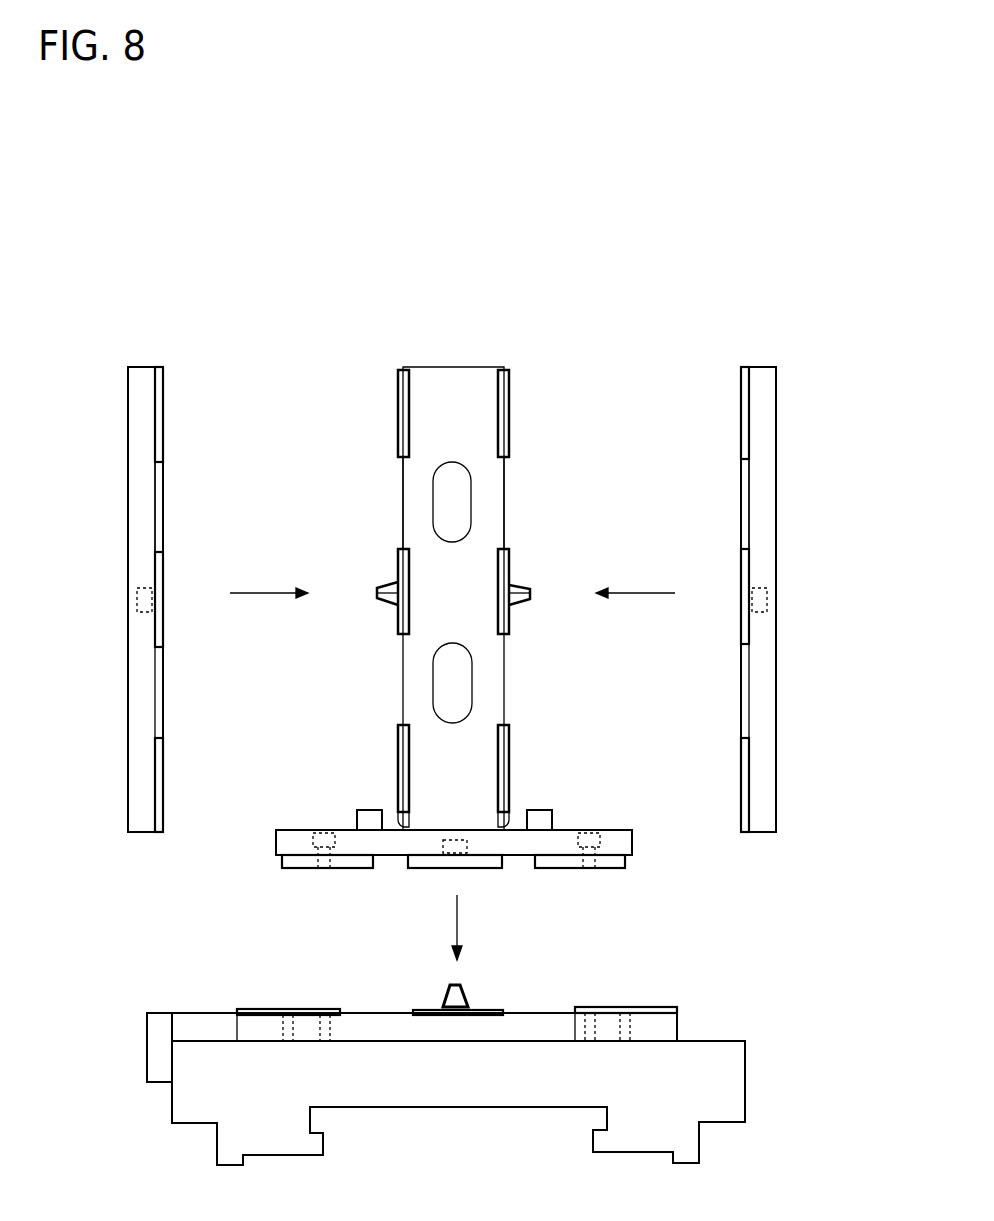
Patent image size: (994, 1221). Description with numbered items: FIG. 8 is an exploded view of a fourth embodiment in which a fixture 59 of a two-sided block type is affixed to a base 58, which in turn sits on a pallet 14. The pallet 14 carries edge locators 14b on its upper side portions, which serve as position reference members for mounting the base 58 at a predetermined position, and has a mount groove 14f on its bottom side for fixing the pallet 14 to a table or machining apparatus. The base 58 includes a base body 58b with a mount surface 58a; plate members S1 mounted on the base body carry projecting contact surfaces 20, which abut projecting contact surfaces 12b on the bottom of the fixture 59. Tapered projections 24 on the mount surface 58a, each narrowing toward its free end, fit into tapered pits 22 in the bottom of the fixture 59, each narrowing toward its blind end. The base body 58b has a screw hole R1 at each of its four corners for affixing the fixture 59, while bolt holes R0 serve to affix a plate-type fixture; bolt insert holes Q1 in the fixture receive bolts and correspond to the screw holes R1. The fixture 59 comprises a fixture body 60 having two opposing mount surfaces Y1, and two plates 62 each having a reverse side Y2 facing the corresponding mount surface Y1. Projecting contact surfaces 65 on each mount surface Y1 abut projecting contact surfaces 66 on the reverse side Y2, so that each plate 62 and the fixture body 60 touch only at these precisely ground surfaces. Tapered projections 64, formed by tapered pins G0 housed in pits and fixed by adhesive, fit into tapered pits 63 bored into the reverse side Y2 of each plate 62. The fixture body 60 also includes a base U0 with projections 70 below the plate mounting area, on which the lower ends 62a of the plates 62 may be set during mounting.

The pallet 14 is at (447, 1089).
The edge locator 14b is at (147, 1050).
The mount groove 14f is at (593, 1140).
The projecting contact surface 20 is at (253, 1009).
The tapered pit 22 is at (452, 856).
The tapered projection 24 is at (442, 991).
The projecting contact surface 12b is at (310, 868).
The base 58 is at (510, 1049).
The mount surface 58a is at (532, 1010).
The base body 58b is at (392, 1030).
The fixture 59 is at (455, 552).
The fixture body 60 is at (451, 367).
The plate 62 is at (147, 367).
The lower end 62a is at (148, 832).
The tapered pit 63 is at (152, 600).
The tapered projection 64 is at (377, 590).
The projecting contact surface 65 is at (398, 412).
The projecting contact surface 66 is at (163, 397).
The projection 70 is at (370, 810).
The tapered pin G0 is at (387, 602).
The mount surface Y1 is at (403, 498).
The reverse side Y2 is at (160, 498).
The bolt insert hole Q1 is at (320, 833).
The bolt hole R0 is at (290, 1008).
The screw hole R1 is at (324, 1008).
The plate member S1 is at (305, 1009).
The base U0 is at (632, 848).